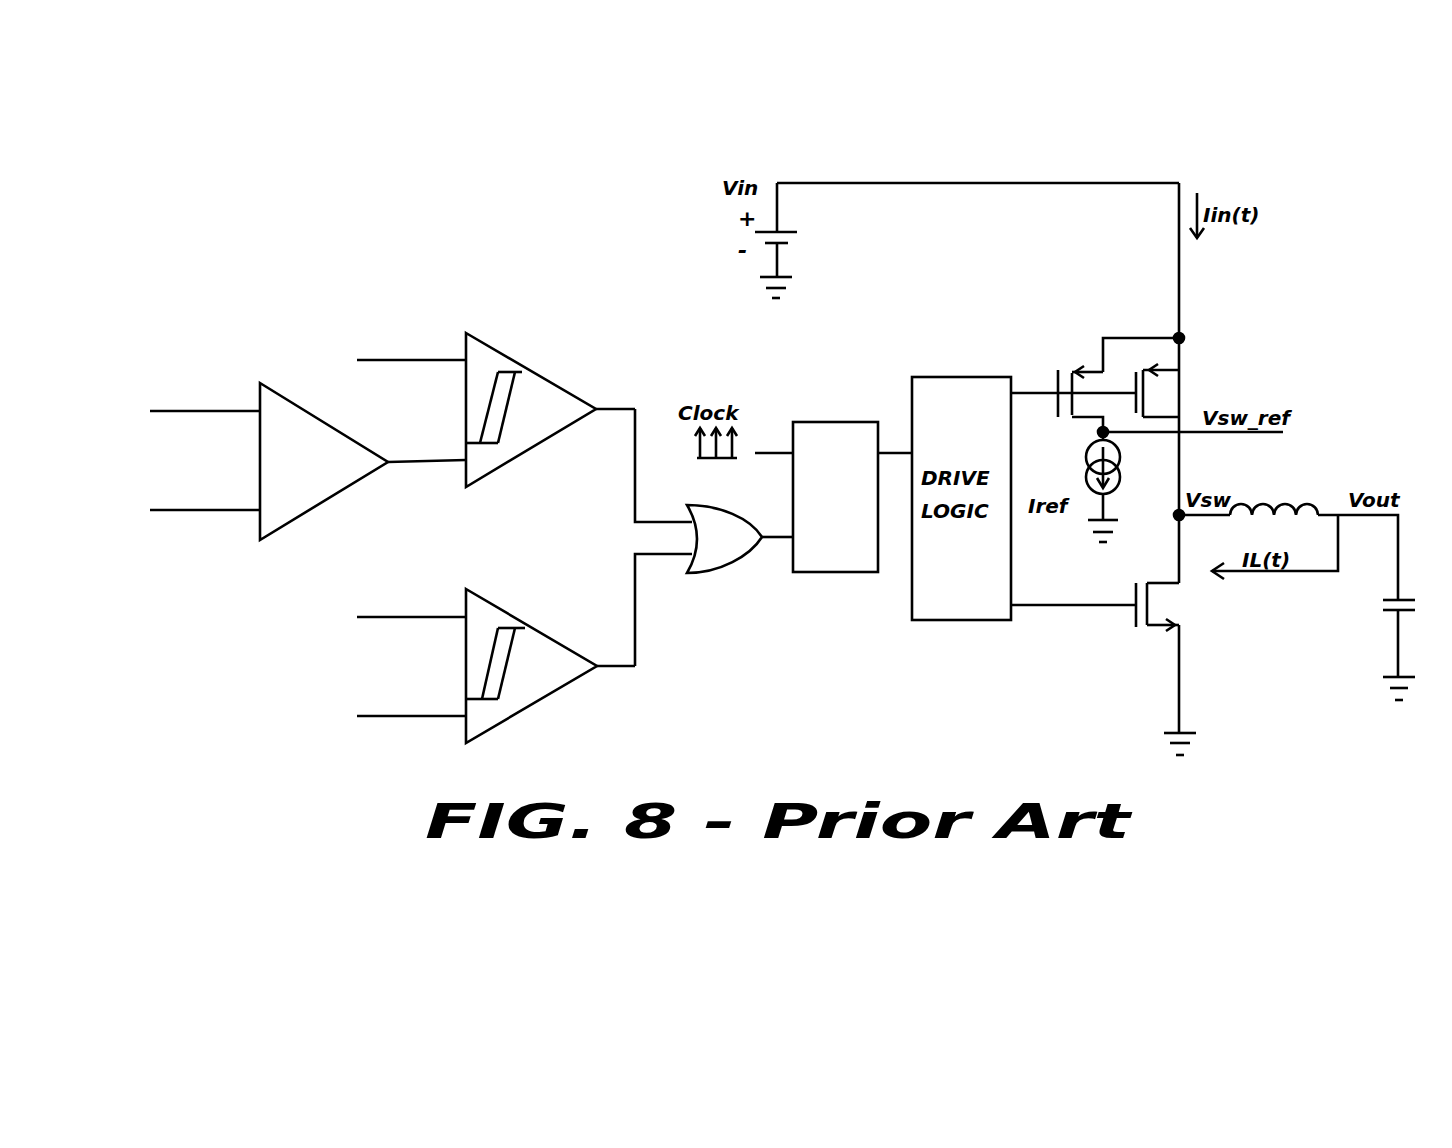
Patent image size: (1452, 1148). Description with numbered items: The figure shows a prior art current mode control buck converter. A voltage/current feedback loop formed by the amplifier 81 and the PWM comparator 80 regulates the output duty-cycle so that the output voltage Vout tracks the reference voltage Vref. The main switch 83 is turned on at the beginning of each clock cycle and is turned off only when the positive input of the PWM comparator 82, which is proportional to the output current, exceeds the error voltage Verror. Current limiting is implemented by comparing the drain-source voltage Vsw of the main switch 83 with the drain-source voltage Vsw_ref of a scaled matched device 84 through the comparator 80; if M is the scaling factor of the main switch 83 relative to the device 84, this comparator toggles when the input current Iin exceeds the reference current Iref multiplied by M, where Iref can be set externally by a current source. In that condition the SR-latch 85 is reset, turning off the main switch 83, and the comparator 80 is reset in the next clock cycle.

The PWM comparator 80 is at (512, 618).
The amplifier 81 is at (320, 503).
The PWM comparator 82 is at (515, 362).
The main switch 83 is at (1184, 384).
The scaled matched device 84 is at (1056, 410).
The SR-latch 85 is at (832, 572).